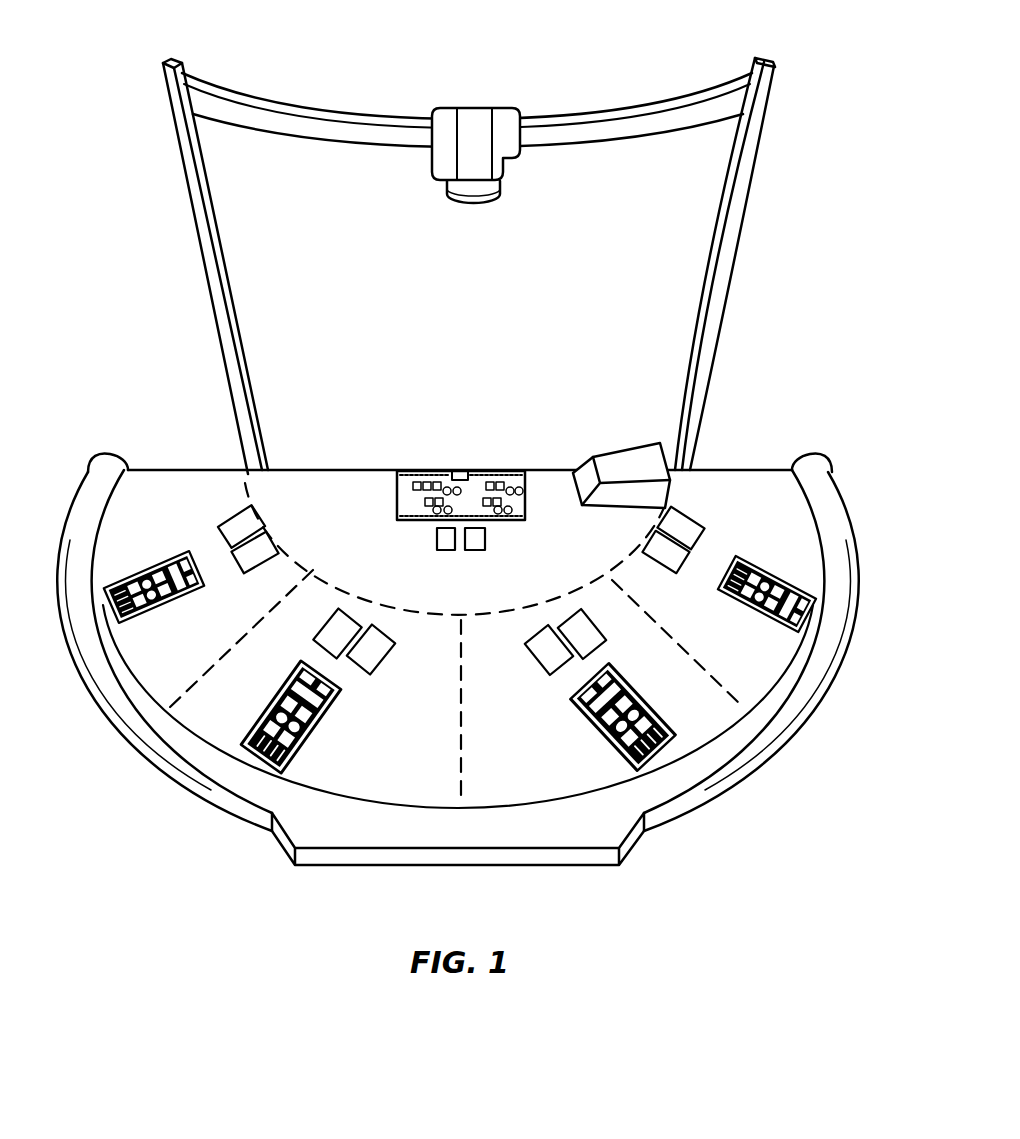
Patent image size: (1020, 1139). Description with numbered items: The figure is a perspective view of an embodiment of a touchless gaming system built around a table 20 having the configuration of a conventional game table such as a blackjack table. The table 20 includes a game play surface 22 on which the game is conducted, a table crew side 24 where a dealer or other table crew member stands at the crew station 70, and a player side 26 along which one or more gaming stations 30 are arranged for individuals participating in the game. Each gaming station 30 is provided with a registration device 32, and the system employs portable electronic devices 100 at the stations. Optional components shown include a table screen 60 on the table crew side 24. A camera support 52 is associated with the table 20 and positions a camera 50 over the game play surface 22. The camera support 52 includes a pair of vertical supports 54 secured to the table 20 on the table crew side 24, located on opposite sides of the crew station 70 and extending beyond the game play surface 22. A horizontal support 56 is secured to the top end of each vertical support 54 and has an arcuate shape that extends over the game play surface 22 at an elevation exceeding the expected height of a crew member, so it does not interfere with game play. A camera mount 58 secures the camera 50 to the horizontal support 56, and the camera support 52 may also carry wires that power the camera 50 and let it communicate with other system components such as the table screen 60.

The table 20 is at (462, 637).
The game play surface 22 is at (477, 602).
The table crew side 24 is at (441, 470).
The player side 26 is at (820, 653).
The gaming station 30 is at (182, 735).
The registration device 32 is at (812, 612).
The camera 50 is at (482, 200).
The camera support 52 is at (507, 237).
The vertical supports 54 is at (210, 256).
The horizontal support 56 is at (320, 112).
The camera mount 58 is at (505, 118).
The table screen 60 is at (531, 471).
The crew station 70 is at (313, 497).
The portable electronic device 100 is at (462, 639).